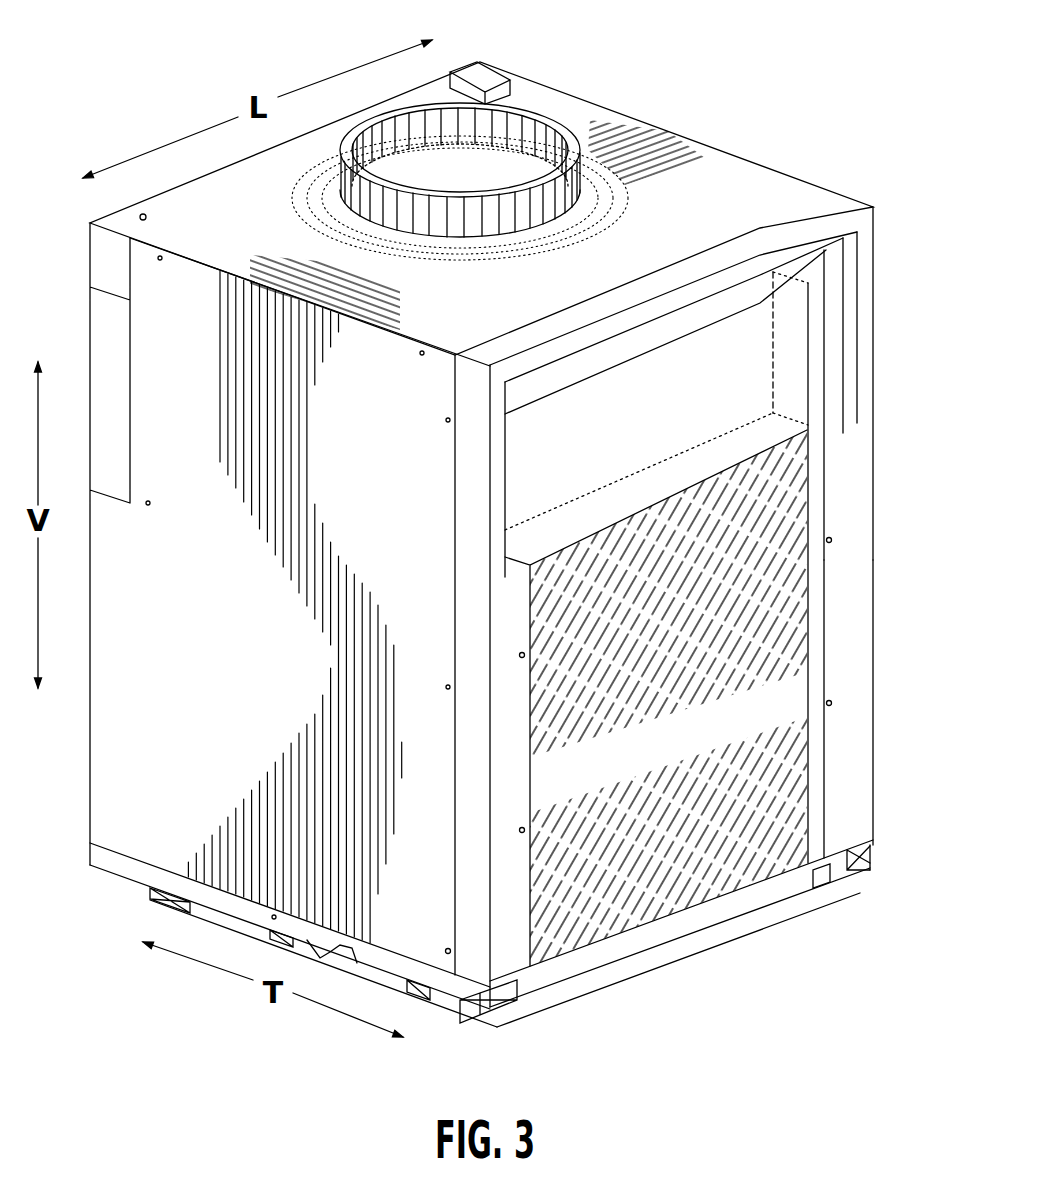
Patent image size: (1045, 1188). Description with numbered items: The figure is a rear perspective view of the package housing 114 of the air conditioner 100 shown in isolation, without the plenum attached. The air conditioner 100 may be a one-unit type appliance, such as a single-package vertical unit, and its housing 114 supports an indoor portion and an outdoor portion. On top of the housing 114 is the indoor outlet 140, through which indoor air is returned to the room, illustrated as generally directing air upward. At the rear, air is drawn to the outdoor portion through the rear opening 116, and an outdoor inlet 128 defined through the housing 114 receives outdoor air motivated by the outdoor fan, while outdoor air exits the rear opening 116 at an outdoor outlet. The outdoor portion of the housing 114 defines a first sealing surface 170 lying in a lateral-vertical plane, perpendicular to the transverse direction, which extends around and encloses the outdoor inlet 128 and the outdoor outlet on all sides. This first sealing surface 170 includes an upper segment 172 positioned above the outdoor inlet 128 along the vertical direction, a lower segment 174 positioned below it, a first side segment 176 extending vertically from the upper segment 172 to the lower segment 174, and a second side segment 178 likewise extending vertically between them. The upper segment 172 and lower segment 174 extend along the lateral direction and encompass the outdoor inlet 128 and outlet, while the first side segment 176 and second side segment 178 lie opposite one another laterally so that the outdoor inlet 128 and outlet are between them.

The air conditioner 100 is at (215, 68).
The package housing 114 is at (770, 173).
The rear opening 116 is at (793, 683).
The outdoor inlet 128 is at (770, 364).
The indoor outlet 140 is at (488, 140).
The first sealing surface 170 is at (845, 541).
The upper segment 172 is at (833, 231).
The lower segment 174 is at (700, 912).
The first side segment 176 is at (503, 931).
The second side segment 178 is at (843, 784).